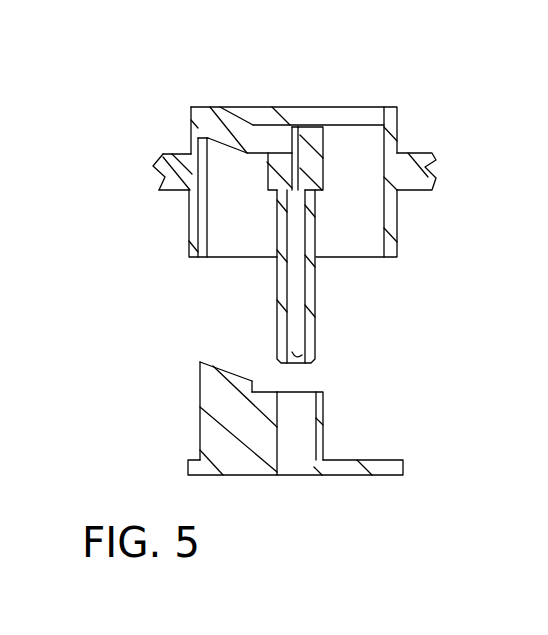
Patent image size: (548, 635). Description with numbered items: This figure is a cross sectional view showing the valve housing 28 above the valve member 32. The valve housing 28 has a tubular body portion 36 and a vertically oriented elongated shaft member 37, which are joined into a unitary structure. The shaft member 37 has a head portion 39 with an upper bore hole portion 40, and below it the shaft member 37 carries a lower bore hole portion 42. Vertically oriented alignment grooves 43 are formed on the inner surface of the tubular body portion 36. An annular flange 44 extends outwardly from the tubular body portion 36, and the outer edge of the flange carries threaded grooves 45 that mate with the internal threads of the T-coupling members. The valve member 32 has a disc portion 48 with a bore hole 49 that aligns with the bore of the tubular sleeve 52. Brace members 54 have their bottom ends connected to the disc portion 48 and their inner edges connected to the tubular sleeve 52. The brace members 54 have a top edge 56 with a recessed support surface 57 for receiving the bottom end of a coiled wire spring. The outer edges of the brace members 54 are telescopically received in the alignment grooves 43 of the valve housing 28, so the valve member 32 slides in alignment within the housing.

The valve housing 28 is at (168, 123).
The valve member 32 is at (163, 392).
The tubular body portion 36 is at (365, 243).
The elongated shaft member 37 is at (312, 295).
The head portion 39 is at (315, 144).
The upper bore hole portion 40 is at (294, 124).
The lower bore hole portion 42 is at (300, 352).
The alignment grooves 43 is at (202, 248).
The annular flange 44 is at (170, 192).
The threaded grooves 45 is at (156, 166).
The disc portion 48 is at (346, 480).
The bore hole 49 is at (277, 458).
The tubular sleeve 52 is at (323, 432).
The brace members 54 is at (210, 433).
The top edge 56 is at (227, 365).
The recessed support surface 57 is at (267, 387).